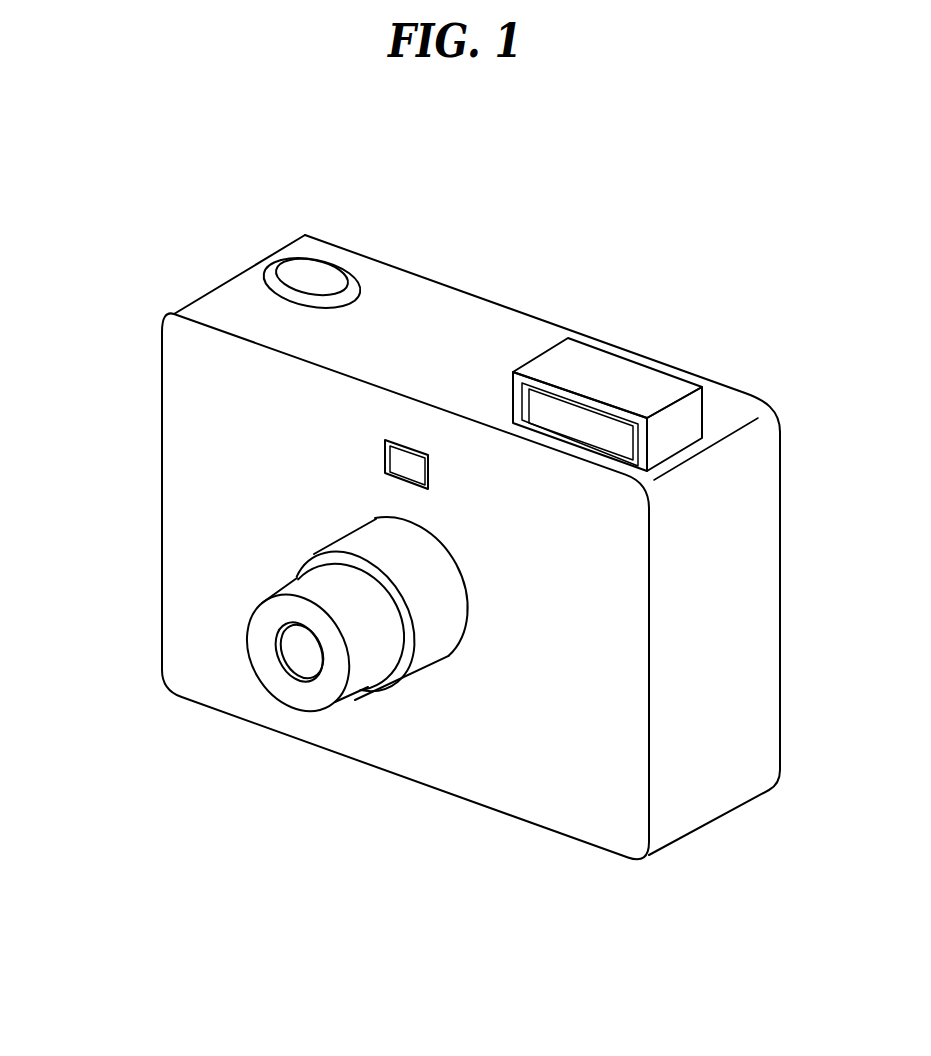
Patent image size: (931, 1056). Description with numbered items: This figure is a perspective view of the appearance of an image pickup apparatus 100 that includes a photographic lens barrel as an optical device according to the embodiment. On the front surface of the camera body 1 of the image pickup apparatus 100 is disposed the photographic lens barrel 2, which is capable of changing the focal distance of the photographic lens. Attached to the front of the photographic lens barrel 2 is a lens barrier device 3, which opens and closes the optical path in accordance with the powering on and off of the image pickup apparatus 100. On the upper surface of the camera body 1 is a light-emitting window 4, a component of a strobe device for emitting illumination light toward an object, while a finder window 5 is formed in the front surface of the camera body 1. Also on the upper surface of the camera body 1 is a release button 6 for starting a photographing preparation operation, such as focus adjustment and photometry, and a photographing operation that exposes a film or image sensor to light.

The image pickup apparatus 100 is at (604, 246).
The camera body 1 is at (195, 507).
The photographic lens barrel 2 is at (367, 645).
The lens barrier device 3 is at (300, 652).
The light-emitting window 4 is at (595, 425).
The finder window 5 is at (407, 460).
The release button 6 is at (312, 277).